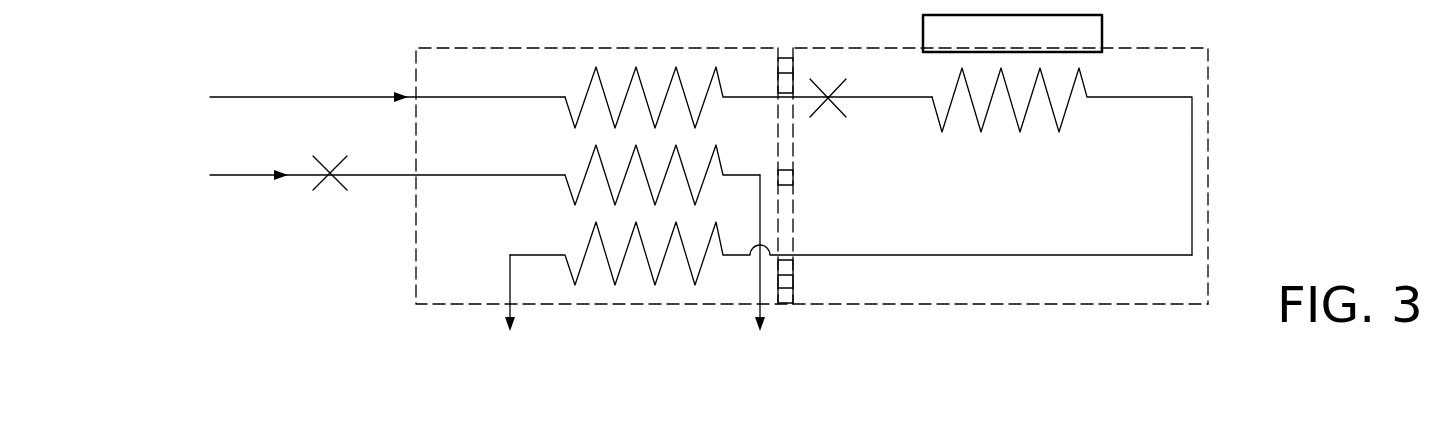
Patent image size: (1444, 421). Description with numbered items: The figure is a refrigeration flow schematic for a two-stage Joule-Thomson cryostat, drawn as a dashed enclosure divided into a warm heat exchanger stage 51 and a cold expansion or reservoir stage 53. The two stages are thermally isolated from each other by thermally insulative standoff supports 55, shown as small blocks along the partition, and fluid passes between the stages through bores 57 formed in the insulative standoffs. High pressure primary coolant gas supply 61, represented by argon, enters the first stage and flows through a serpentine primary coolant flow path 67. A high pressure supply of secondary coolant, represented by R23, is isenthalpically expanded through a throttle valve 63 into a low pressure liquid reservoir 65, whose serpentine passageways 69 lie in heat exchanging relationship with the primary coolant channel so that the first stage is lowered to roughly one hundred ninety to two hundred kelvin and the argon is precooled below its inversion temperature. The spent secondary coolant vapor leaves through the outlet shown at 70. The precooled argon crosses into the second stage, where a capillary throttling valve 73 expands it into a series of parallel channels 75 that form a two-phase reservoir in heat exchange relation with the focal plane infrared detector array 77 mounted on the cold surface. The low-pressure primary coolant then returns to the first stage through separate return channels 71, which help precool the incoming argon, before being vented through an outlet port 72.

The heat exchanger stage 51 is at (724, 46).
The expansion or reservoir stage 53 is at (833, 47).
The thermally insulative standoff supports 55 is at (787, 57).
The bores 57 is at (774, 102).
The primary coolant gas supply 61 is at (477, 95).
The throttle valve 63 is at (333, 156).
The low pressure liquid reservoir 65 is at (478, 173).
The primary coolant flow path 67 is at (588, 80).
The secondary coolant flow path 69 is at (588, 158).
The R23 outlet 70 is at (752, 305).
The primary coolant return channels 71 is at (588, 238).
The outlet port 72 is at (502, 305).
The throttling valve 73 is at (843, 82).
The parallel channels 75 is at (1028, 120).
The focal plane infrared detector array 77 is at (1104, 28).